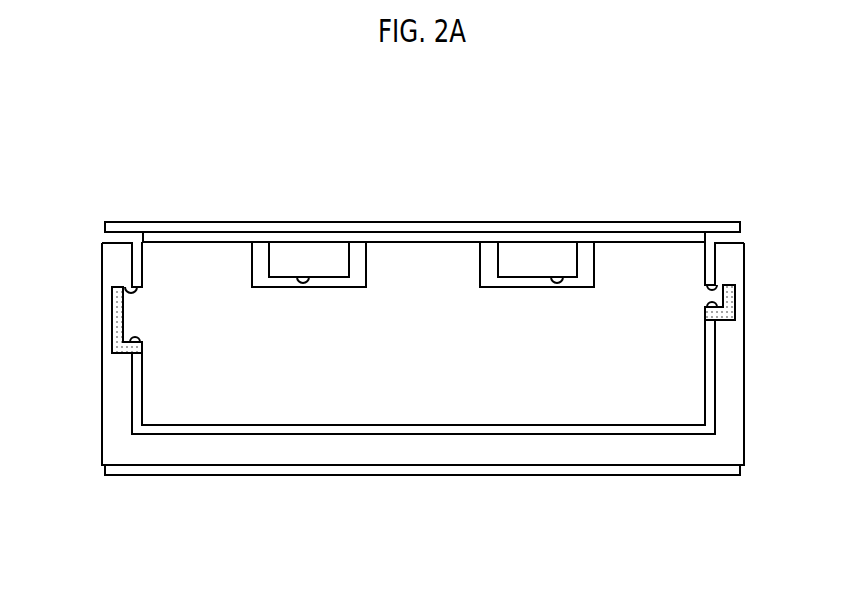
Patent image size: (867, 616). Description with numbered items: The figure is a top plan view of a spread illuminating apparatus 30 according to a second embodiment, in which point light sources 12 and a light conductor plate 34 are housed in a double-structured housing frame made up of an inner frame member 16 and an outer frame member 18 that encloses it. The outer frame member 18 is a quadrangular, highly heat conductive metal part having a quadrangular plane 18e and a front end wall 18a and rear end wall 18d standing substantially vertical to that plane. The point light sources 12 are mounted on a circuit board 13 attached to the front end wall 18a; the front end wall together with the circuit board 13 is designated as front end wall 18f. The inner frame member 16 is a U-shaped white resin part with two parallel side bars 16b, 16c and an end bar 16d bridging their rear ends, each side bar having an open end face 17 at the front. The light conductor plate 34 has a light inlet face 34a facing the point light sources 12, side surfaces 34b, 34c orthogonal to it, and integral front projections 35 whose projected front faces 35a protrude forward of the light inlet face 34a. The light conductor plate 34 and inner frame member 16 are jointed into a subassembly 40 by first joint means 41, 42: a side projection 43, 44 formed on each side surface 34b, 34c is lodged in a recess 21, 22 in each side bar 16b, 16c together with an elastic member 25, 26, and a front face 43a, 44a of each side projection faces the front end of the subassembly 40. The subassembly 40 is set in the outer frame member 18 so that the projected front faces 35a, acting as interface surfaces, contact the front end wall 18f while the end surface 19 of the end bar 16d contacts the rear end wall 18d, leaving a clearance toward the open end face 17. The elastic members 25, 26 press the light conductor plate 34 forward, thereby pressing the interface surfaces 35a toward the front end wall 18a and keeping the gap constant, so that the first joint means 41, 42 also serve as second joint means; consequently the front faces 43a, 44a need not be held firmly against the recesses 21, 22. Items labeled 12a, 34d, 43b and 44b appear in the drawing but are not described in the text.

The point light source 12 is at (328, 250).
The electrode bump of chip 12a is at (308, 280).
The circuit board 13 is at (197, 237).
The inner frame member 16 is at (210, 455).
The side bar 16b is at (107, 402).
The side bar 16c is at (741, 400).
The end bar 16d is at (413, 453).
The open end face 17 is at (118, 240).
The outer frame member 18 is at (297, 477).
The front end wall 18a is at (230, 228).
The rear end wall 18d is at (355, 470).
The quadrangular plane 18e is at (623, 430).
The front end wall combined with circuit board 18f is at (262, 142).
The end surface 19 is at (528, 467).
The recess 21 is at (112, 297).
The recess 22 is at (720, 293).
The elastic member 25 is at (113, 347).
The elastic member 26 is at (727, 320).
The spread illuminating apparatus 30 is at (390, 530).
The light conductor plate 34 is at (247, 425).
The light inlet face 34a is at (262, 266).
The side surface 34b is at (128, 408).
The side surface 34c is at (715, 410).
The bottom of inner casing 34d is at (473, 425).
The front projection 35 is at (172, 255).
The projected front face 35a is at (153, 222).
The subassembly 40 is at (423, 410).
The first joint means 41 is at (77, 322).
The first joint means 42 is at (771, 300).
The side projection 43 is at (118, 317).
The front face 43a is at (128, 292).
The left lead lower portion 43b is at (90, 378).
The side projection 44 is at (733, 298).
The front face 44a is at (723, 285).
The right lead lower portion 44b is at (756, 350).